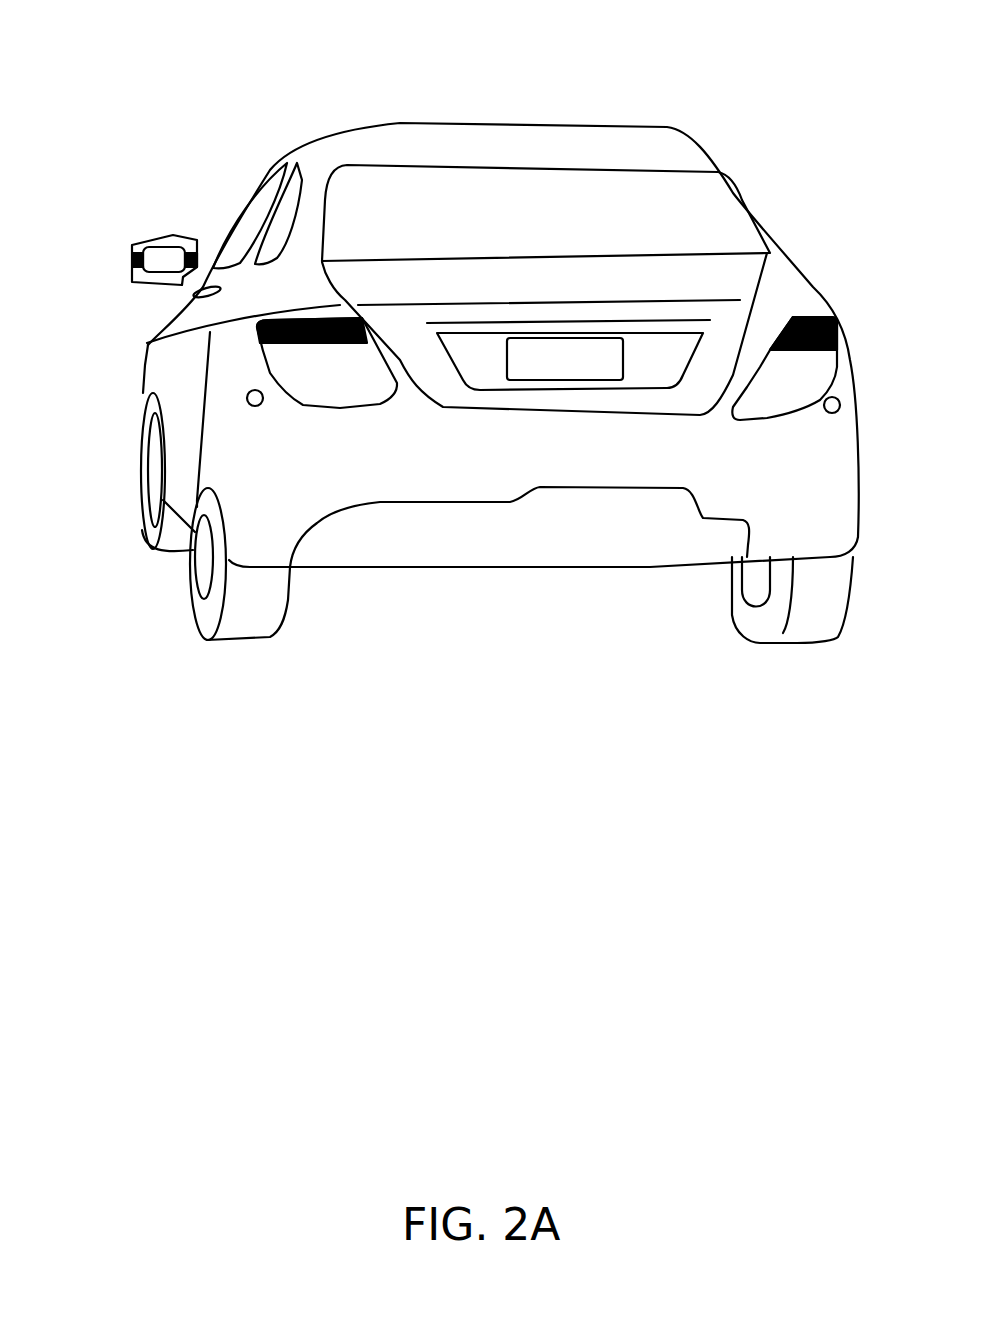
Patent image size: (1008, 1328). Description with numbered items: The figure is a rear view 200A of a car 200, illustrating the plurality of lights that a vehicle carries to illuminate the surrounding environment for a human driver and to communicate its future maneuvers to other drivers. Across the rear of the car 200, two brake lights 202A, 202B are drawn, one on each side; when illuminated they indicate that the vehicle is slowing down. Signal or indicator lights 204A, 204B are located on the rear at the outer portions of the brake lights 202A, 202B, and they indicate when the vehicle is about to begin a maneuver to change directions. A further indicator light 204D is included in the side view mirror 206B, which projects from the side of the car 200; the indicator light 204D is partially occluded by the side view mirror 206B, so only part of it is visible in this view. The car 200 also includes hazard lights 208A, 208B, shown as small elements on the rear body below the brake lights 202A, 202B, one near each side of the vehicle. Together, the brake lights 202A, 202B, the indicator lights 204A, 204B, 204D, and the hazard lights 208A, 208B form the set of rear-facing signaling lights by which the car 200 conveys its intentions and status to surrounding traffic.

The car 200 is at (462, 326).
The rear view 200A is at (517, 1192).
The brake light 202A is at (360, 377).
The brake light 202B is at (823, 393).
The signal or indicator light 204A is at (257, 336).
The signal or indicator light 204B is at (807, 314).
The indicator light 204D is at (131, 261).
The side view mirror 206B is at (163, 258).
The hazard light 208A is at (258, 406).
The hazard light 208B is at (829, 413).